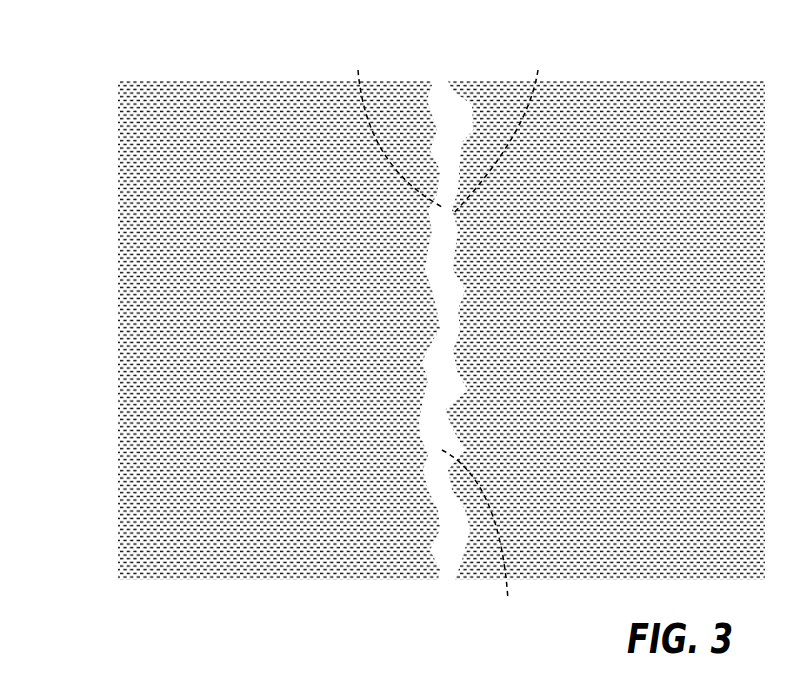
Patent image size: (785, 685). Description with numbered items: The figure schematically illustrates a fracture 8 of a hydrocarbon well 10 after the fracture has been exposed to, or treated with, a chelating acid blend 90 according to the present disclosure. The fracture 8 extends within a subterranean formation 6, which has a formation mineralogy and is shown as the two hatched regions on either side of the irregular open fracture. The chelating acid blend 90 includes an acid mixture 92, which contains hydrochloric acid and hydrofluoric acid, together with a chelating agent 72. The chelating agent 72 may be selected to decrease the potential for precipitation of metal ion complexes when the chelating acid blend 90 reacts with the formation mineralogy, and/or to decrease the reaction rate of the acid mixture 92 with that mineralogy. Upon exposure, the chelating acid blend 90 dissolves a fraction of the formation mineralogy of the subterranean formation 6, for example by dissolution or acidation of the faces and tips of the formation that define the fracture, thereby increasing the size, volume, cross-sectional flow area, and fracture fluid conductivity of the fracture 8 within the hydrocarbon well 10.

The hydrocarbon well 10 is at (62, 101).
The subterranean formation 6 is at (115, 265).
The fracture 8 is at (450, 566).
The chelating agent 72 is at (538, 70).
The chelating acid blend 90 is at (508, 600).
The acid mixture 92 is at (358, 70).